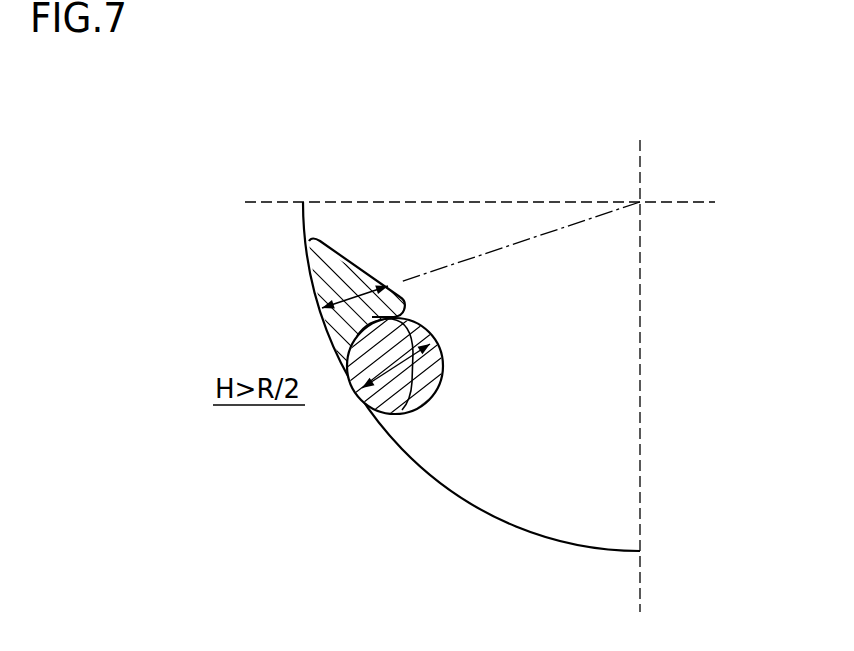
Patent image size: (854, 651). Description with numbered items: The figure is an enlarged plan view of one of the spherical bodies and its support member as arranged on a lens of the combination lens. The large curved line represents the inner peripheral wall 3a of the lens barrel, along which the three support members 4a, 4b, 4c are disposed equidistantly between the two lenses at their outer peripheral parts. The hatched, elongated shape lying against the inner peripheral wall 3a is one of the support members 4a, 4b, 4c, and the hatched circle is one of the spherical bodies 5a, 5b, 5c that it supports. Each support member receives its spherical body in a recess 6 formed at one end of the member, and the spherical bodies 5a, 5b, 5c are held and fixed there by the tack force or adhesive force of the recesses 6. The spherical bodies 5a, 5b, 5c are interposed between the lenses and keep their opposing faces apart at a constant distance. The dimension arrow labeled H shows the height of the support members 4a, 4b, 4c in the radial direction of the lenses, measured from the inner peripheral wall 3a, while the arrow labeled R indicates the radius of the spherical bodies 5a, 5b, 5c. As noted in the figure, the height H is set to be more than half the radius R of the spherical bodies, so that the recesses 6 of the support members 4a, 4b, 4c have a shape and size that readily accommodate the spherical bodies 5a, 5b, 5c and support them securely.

The inner peripheral wall 3a is at (432, 481).
The support member 4a is at (430, 286).
The support member 4b is at (430, 286).
The support member 4c is at (347, 273).
The spherical body 5a is at (482, 368).
The spherical body 5b is at (482, 368).
The spherical body 5c is at (425, 382).
The recess 6 is at (422, 331).
The height of the support members H is at (348, 305).
The radius of the spherical bodies R is at (384, 416).